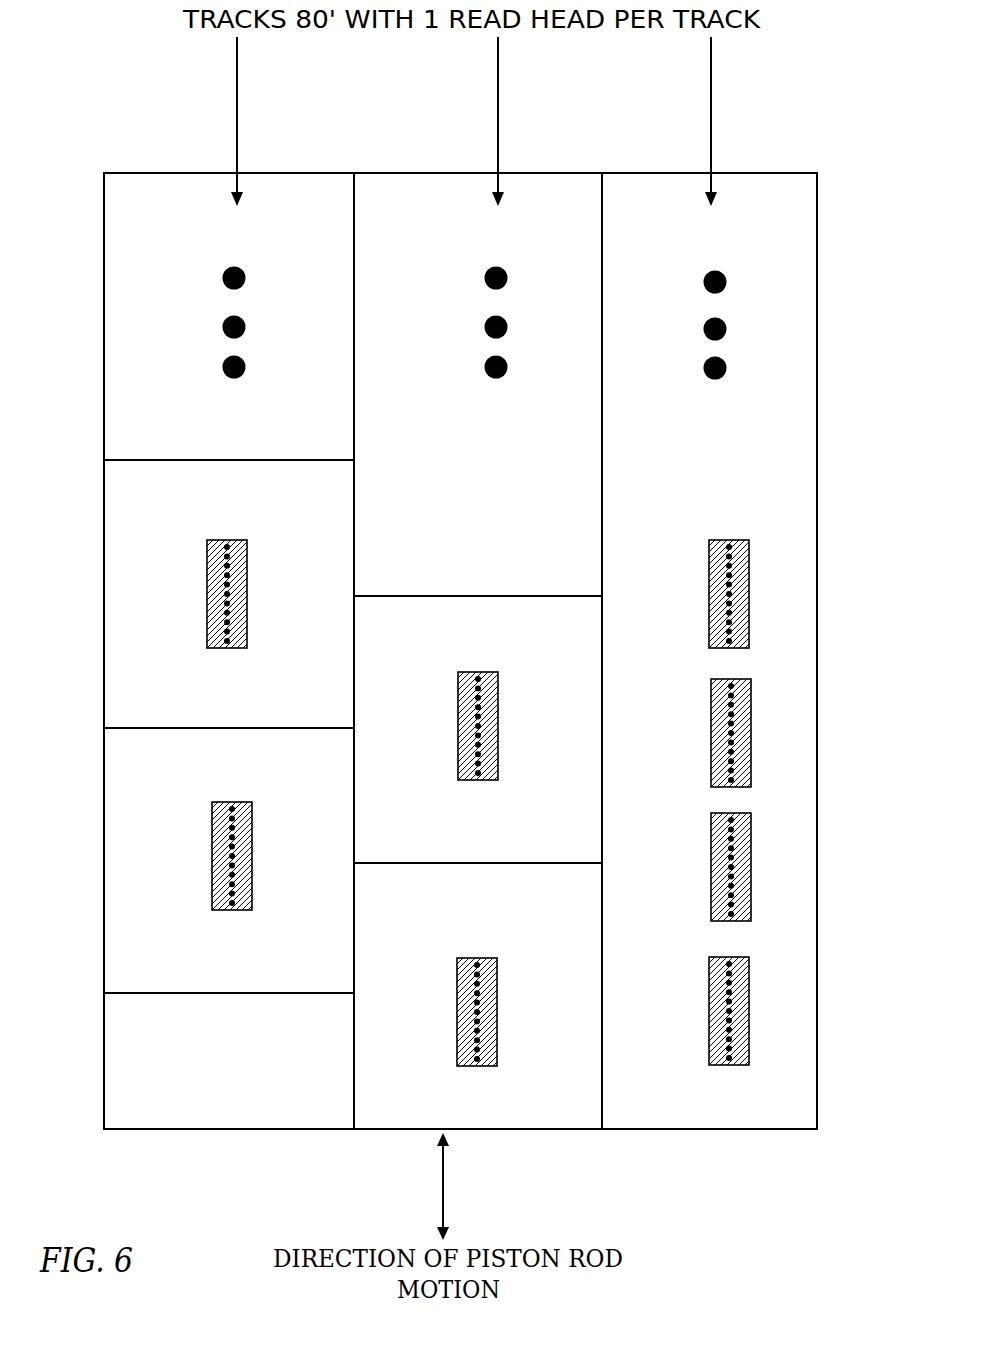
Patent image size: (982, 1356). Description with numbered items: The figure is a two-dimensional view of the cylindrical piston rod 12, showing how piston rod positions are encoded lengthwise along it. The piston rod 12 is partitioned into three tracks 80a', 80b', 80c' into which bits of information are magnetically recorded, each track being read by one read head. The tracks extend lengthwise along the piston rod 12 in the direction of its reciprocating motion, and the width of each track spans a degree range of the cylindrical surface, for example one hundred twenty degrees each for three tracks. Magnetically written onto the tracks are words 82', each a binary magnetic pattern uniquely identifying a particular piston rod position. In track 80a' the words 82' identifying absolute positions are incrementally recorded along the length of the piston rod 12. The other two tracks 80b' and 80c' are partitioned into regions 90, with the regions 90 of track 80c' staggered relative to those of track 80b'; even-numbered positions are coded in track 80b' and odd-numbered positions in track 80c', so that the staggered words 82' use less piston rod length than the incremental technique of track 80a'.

The piston rod 12 is at (817, 173).
The track 80a' is at (709, 623).
The track 80b' is at (478, 621).
The track 80c' is at (229, 618).
The word 82' is at (465, 803).
The region 90 is at (143, 566).